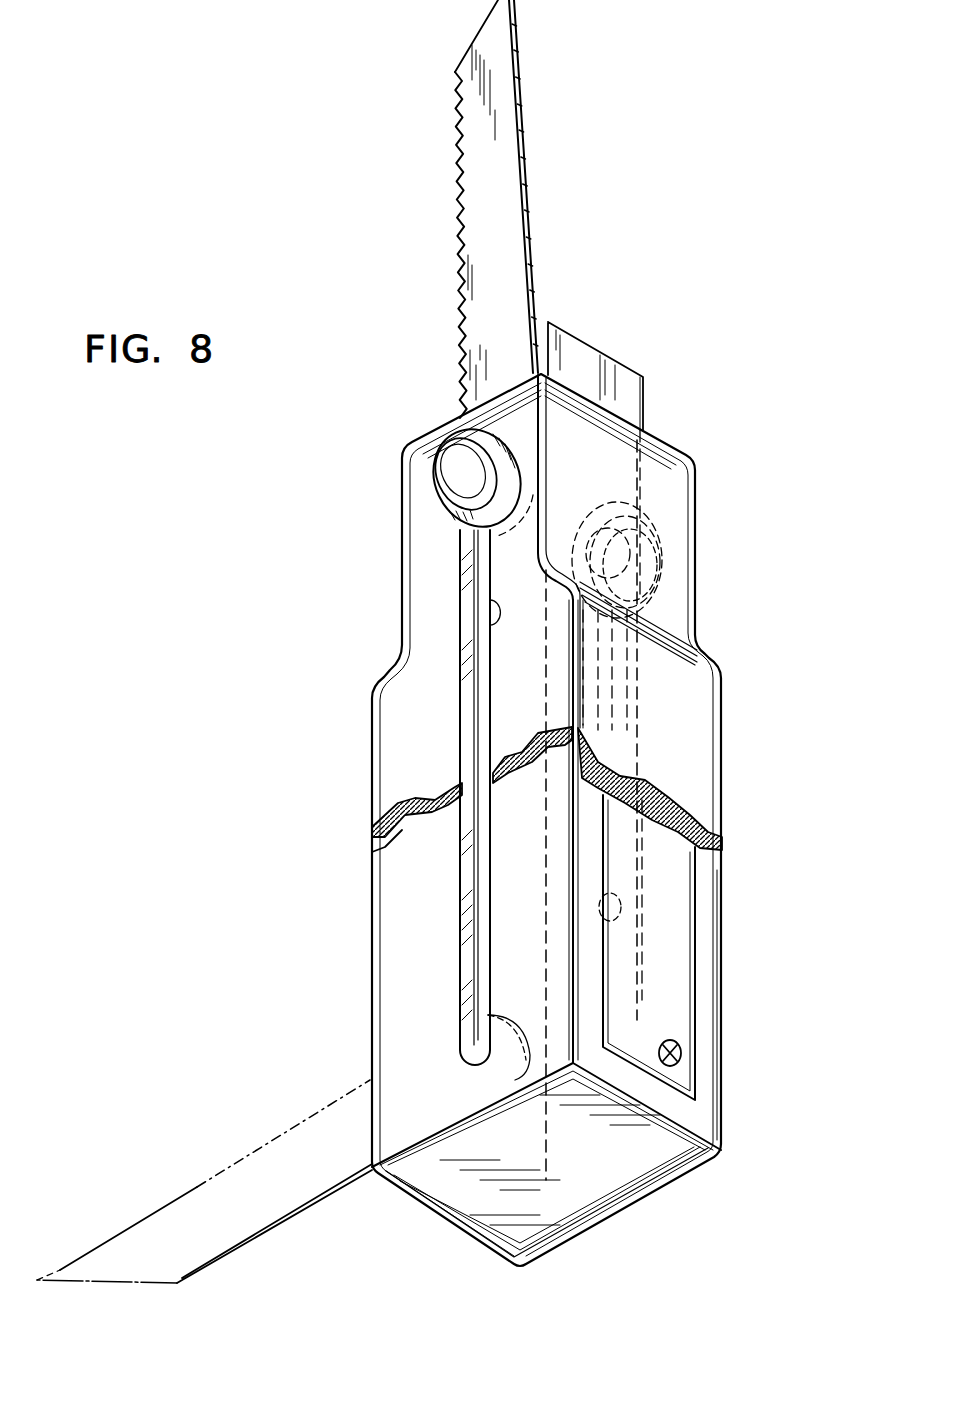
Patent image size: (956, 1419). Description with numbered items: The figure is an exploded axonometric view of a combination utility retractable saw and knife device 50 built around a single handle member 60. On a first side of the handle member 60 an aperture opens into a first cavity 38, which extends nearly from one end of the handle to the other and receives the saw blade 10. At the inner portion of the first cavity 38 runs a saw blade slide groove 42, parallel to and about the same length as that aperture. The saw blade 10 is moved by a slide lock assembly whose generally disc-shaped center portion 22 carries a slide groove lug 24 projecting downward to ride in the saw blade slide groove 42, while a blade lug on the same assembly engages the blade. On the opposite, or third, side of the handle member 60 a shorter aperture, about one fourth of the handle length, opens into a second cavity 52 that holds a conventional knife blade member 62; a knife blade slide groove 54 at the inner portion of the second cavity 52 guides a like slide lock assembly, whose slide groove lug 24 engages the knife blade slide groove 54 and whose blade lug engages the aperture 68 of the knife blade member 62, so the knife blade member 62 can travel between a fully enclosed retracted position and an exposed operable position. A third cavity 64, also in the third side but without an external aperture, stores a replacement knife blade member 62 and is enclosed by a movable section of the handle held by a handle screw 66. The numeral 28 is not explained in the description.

The saw blade 10 is at (483, 271).
The center portion 22 is at (647, 482).
The slide groove lug 24 is at (657, 425).
The knob 28 is at (455, 477).
The first cavity 38 is at (525, 711).
The saw blade slide groove 42 is at (490, 612).
The combination utility retractable saw and knife device 50 is at (600, 145).
The second cavity 52 is at (640, 613).
The knife blade slide groove 54 is at (640, 685).
The handle member 60 is at (407, 772).
The knife blade member 62 is at (590, 362).
The third cavity 64 is at (677, 877).
The handle screw 66 is at (682, 1058).
The aperture 68 is at (622, 912).